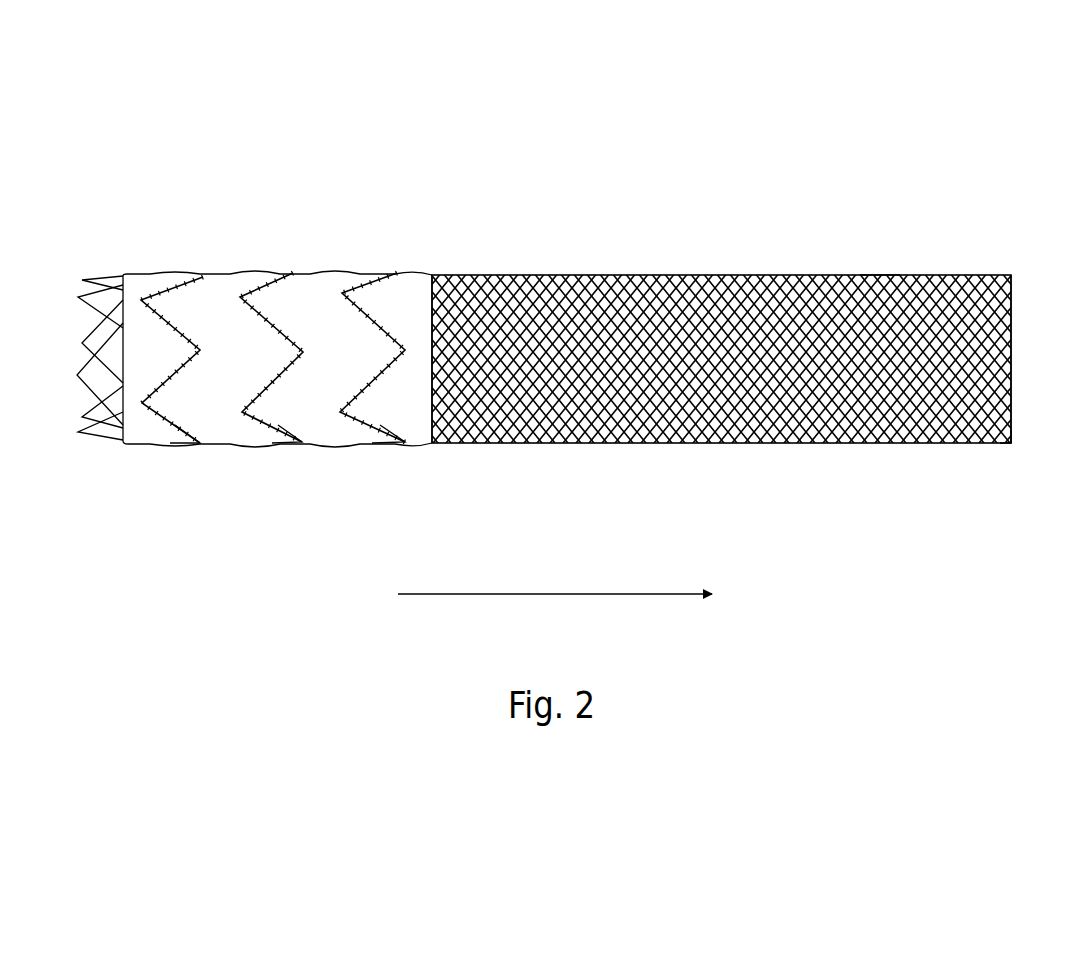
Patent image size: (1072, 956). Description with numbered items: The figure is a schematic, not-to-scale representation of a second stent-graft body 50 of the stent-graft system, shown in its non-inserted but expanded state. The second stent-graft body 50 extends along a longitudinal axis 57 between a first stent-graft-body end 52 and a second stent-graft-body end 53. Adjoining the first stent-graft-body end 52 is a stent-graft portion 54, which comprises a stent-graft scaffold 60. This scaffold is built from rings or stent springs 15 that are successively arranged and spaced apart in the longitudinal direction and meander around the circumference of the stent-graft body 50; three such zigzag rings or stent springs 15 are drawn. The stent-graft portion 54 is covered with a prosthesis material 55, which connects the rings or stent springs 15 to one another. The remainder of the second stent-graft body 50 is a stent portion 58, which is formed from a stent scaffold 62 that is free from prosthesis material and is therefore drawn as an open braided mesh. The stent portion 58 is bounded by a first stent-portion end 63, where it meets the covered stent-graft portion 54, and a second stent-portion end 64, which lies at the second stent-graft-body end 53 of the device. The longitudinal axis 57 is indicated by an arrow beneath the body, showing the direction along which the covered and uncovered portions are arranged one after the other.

The second stent-graft body 50 is at (638, 168).
The first stent-graft-body end 52 is at (150, 208).
The second stent-graft-body end 53 is at (1010, 232).
The stent-graft portion 54 is at (238, 275).
The prosthesis material 55 is at (322, 283).
The longitudinal axis 57 is at (555, 612).
The stent portion 58 is at (685, 275).
The stent-graft scaffold 60 is at (183, 273).
The stent scaffold 62 is at (877, 298).
The first stent-portion end 63 is at (433, 262).
The second stent-portion end 64 is at (1011, 455).
The rings or stent springs 15 is at (177, 432).